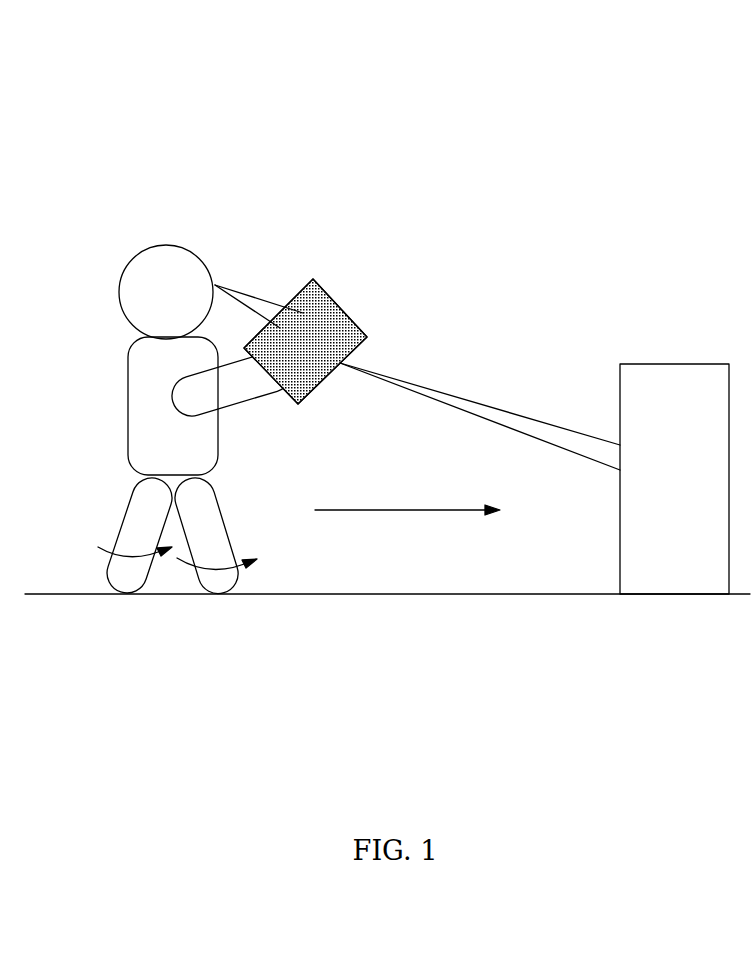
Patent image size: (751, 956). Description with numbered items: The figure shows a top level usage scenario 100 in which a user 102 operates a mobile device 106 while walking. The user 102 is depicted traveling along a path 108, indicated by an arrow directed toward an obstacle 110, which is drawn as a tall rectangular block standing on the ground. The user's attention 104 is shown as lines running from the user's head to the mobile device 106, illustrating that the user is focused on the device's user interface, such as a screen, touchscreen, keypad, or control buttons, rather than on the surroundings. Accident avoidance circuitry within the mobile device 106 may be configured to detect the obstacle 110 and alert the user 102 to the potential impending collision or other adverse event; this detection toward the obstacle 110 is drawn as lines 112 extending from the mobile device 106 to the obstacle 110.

The top level usage scenario 100 is at (386, 44).
The user 102 is at (128, 388).
The user's attention 104 is at (262, 270).
The mobile device 106 is at (355, 320).
The path 108 is at (388, 511).
The obstacle 110 is at (662, 498).
The device sensing field toward obstacle 112 is at (495, 360).